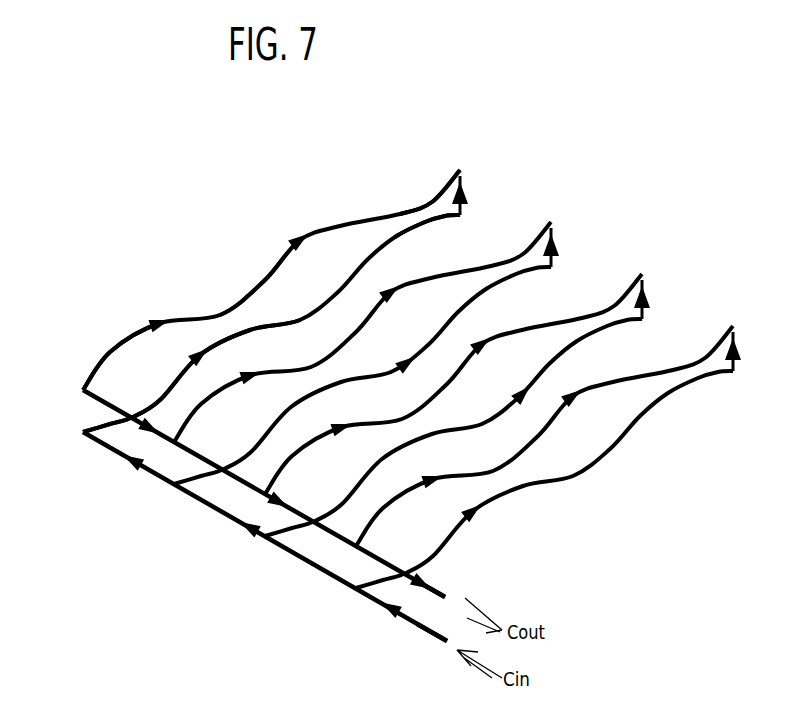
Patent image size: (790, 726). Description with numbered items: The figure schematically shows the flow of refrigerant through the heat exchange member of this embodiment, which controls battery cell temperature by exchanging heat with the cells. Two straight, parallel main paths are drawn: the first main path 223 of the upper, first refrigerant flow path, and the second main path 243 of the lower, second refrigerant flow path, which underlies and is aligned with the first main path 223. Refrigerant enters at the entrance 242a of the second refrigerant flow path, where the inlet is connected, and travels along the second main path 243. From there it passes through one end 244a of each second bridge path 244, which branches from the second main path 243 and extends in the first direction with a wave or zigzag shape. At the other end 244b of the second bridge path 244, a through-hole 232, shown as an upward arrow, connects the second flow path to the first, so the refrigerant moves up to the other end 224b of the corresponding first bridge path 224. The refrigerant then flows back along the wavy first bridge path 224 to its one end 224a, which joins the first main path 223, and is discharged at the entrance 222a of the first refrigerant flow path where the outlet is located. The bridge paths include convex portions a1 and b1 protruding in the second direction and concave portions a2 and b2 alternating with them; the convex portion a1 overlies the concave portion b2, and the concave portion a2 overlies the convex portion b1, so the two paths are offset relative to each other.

The first bridge path 224 is at (358, 220).
The one end of the first bridge path 224a is at (80, 387).
The other end of the first bridge path 224b is at (468, 167).
The through-hole 232 is at (464, 180).
The second bridge path 244 is at (110, 424).
The one end of the second bridge path 244a is at (81, 434).
The other end of the second bridge path 244b is at (473, 217).
The convex portion a1 is at (137, 327).
The concave portion a2 is at (224, 303).
The convex portion b1 is at (241, 329).
The concave portion b2 is at (155, 401).
The first main path 223 is at (298, 517).
The second main path 243 is at (188, 499).
The entrance of the first refrigerant flow path 222a is at (441, 592).
The entrance of the second refrigerant flow path 242a is at (428, 633).